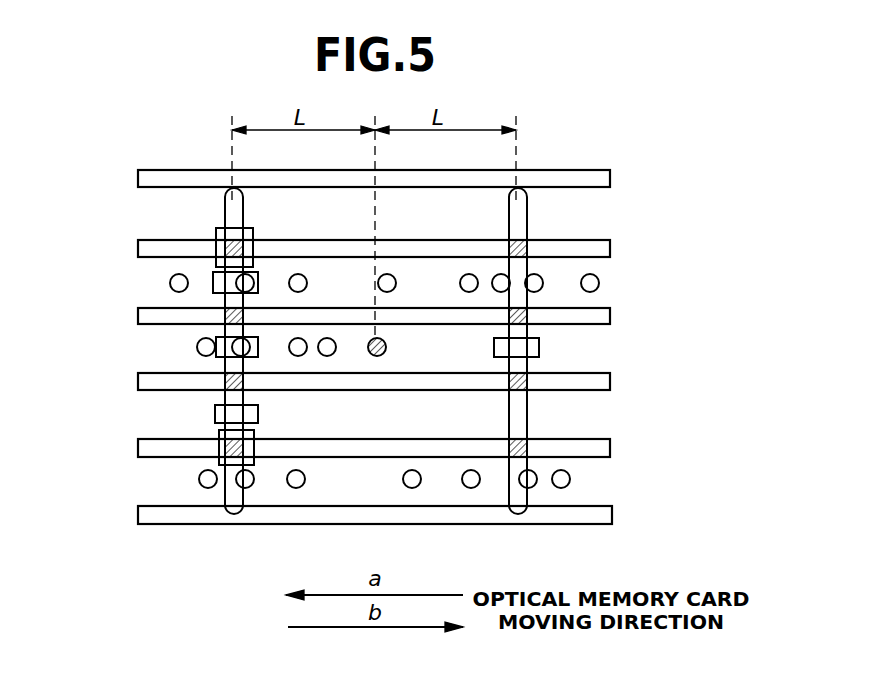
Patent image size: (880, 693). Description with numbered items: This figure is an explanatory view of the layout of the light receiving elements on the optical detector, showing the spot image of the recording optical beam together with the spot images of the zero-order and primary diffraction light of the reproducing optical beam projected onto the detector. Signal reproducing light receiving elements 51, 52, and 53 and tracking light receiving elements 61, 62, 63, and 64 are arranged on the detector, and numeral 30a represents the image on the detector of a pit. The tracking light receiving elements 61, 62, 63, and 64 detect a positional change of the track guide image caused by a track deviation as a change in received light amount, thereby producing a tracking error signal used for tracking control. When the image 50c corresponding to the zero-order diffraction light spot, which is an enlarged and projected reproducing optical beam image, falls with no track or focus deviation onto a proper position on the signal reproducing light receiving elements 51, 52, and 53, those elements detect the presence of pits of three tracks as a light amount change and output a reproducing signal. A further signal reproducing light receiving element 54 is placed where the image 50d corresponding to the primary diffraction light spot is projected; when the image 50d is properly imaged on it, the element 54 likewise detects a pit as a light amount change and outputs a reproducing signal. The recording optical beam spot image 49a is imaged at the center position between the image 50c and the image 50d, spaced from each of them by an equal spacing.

The image of the pit 30a is at (329, 356).
The recording optical beam spot image 49a is at (386, 350).
The image corresponding to the 0-order diffraction light spot 50c is at (227, 506).
The image corresponding to the primary diffraction light spot 50d is at (520, 506).
The signal reproducing light receiving element 51 is at (213, 284).
The signal reproducing light receiving element 52 is at (216, 341).
The signal reproducing light receiving element 53 is at (215, 410).
The signal reproducing light receiving element 54 is at (539, 350).
The tracking light receiving element 61 is at (217, 228).
The tracking light receiving element 62 is at (215, 266).
The tracking light receiving element 63 is at (254, 436).
The tracking light receiving element 64 is at (220, 464).